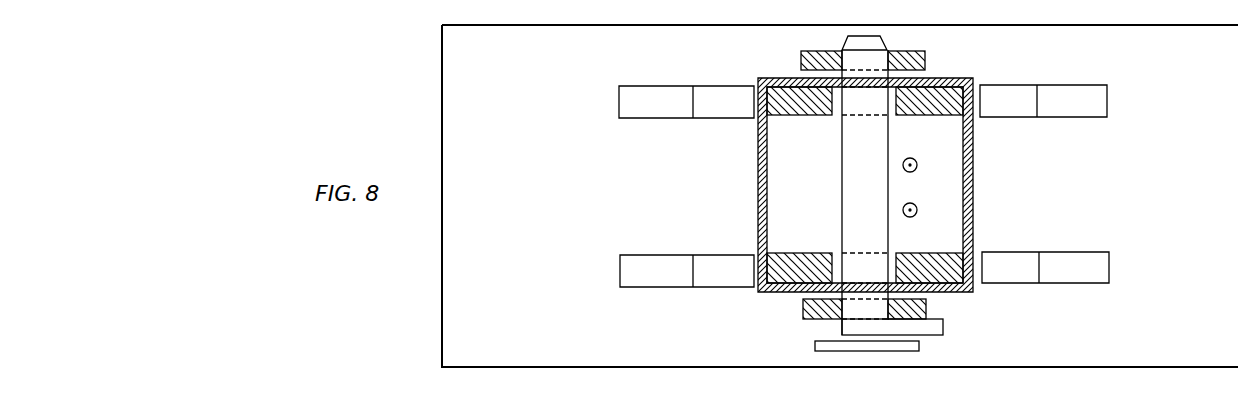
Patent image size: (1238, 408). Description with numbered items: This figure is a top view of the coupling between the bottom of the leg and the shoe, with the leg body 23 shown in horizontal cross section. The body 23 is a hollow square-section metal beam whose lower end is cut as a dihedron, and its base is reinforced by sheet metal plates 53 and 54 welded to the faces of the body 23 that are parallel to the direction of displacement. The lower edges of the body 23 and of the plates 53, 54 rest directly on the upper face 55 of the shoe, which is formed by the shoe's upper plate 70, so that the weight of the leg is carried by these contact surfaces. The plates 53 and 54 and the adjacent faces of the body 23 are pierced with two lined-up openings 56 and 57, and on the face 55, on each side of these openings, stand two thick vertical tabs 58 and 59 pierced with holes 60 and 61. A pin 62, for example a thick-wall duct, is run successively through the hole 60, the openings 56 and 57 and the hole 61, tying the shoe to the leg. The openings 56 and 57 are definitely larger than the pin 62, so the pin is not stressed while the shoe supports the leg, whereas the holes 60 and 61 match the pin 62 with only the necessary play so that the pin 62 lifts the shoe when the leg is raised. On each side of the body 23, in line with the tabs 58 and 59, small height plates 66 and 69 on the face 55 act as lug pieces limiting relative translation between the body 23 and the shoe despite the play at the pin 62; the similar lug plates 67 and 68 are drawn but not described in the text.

The body 23 is at (968, 178).
The reinforcing sheet metal plate 53 is at (933, 107).
The reinforcing sheet metal plate 54 is at (934, 263).
The upper face of shoe 55 is at (819, 198).
The opening 56 is at (893, 110).
The opening 57 is at (893, 265).
The vertical tab 58 is at (907, 60).
The vertical tab 59 is at (817, 311).
The hole 60 is at (842, 51).
The hole 61 is at (842, 321).
The pin 62 is at (878, 192).
The small height plate 66 is at (715, 92).
The upper right block 67 is at (1007, 100).
The lower left block 68 is at (663, 262).
The small height plate 69 is at (1015, 263).
The upper plate 70 is at (625, 212).